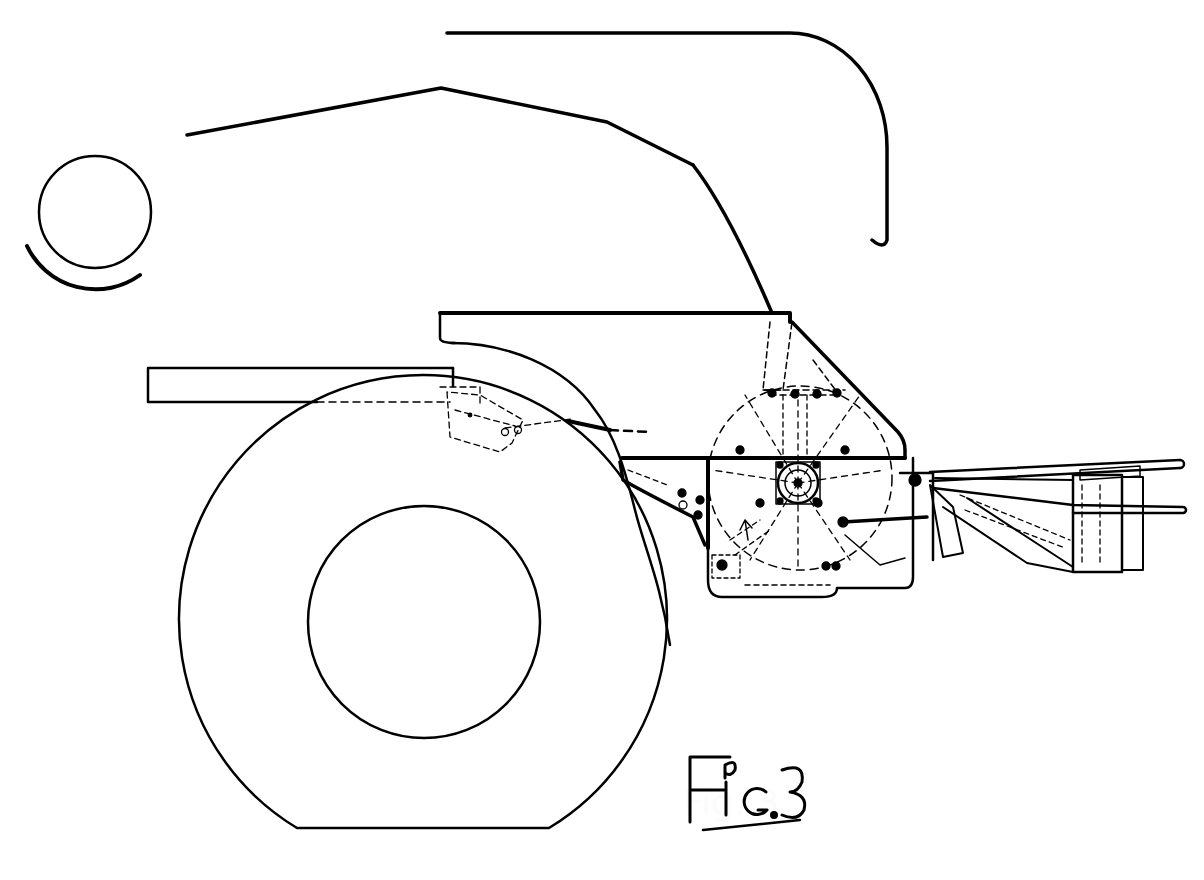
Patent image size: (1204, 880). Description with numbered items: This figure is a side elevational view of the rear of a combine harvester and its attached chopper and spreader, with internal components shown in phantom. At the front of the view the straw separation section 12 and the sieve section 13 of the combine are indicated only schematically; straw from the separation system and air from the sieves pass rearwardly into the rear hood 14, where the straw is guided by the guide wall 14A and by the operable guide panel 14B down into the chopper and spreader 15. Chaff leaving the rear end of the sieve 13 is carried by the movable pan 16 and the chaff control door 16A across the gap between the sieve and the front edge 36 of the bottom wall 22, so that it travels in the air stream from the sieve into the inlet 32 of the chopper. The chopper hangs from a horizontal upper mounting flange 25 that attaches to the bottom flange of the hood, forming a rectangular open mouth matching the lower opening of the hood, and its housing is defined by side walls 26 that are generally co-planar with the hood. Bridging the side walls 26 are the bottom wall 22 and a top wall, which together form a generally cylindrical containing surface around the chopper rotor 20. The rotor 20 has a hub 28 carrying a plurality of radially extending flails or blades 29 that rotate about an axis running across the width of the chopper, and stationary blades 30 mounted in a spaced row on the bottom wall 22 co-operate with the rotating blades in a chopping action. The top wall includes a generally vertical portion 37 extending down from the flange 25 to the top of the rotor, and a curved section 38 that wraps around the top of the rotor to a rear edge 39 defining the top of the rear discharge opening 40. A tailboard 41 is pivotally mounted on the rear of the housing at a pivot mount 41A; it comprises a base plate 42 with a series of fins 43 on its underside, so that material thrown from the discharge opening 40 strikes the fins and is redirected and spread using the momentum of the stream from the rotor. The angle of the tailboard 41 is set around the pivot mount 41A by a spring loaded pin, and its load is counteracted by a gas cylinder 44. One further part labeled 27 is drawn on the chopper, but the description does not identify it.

The straw separation section 12 is at (138, 207).
The sieve section 13 is at (270, 380).
The rear hood 14 is at (887, 172).
The guide wall 14A is at (605, 125).
The operable guide panel 14B is at (745, 230).
The chopper and spreader 15 is at (896, 396).
The movable pan 16 is at (587, 428).
The chaff control door 16A is at (677, 497).
The chopper rotor 20 is at (747, 567).
The bottom wall 22 is at (807, 597).
The horizontal upper mounting flange 25 is at (573, 300).
The side walls 26 is at (643, 382).
The support arm 27 is at (822, 392).
The hub 28 is at (748, 560).
The flails or blades 29 is at (857, 550).
The stationary blades 30 is at (780, 597).
The inlet 32 is at (705, 427).
The front edge 36 is at (710, 553).
The generally vertical portion 37 is at (790, 357).
The curved section 38 is at (843, 392).
The rear edge 39 is at (913, 462).
The rear discharge opening 40 is at (933, 547).
The tailboard 41 is at (1048, 435).
The pivot mount 41A is at (957, 463).
The base plate 42 is at (1055, 470).
The fins 43 is at (1045, 562).
The gas cylinder 44 is at (846, 527).